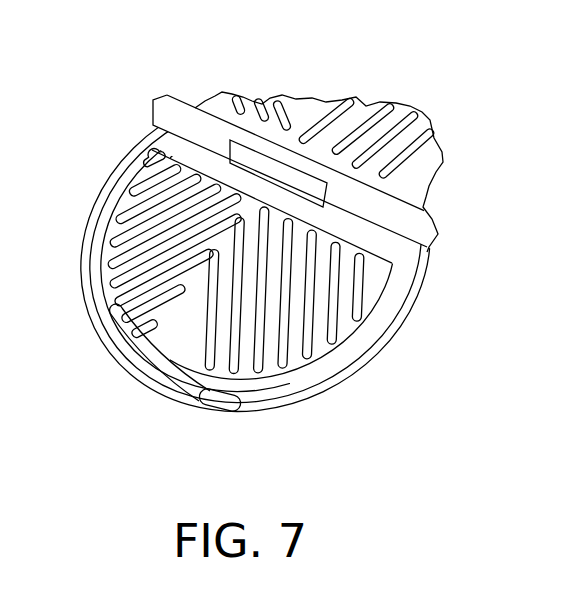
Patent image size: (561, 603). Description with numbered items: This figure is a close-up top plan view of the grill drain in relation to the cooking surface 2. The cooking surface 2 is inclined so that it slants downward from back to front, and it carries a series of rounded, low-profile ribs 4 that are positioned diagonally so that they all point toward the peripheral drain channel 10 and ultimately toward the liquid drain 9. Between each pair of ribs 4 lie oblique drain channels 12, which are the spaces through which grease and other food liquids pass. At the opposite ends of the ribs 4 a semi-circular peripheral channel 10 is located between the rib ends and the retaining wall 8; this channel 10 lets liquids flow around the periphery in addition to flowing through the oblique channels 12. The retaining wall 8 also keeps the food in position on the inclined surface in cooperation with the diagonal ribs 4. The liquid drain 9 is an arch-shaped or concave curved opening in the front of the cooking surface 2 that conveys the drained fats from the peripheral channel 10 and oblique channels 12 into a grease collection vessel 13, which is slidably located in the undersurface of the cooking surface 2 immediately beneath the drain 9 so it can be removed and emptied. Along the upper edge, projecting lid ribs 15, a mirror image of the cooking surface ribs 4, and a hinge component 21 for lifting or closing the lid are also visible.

The cooking surface 2 is at (415, 293).
The ribs 4 is at (128, 213).
The retaining wall 8 is at (143, 162).
The drain 9 is at (160, 360).
The peripheral drain channel 10 is at (132, 180).
The oblique drain channels 12 is at (267, 98).
The grease collection vessel 13 is at (117, 357).
The lid ribs 15 is at (231, 94).
The hinge component 21 is at (330, 193).